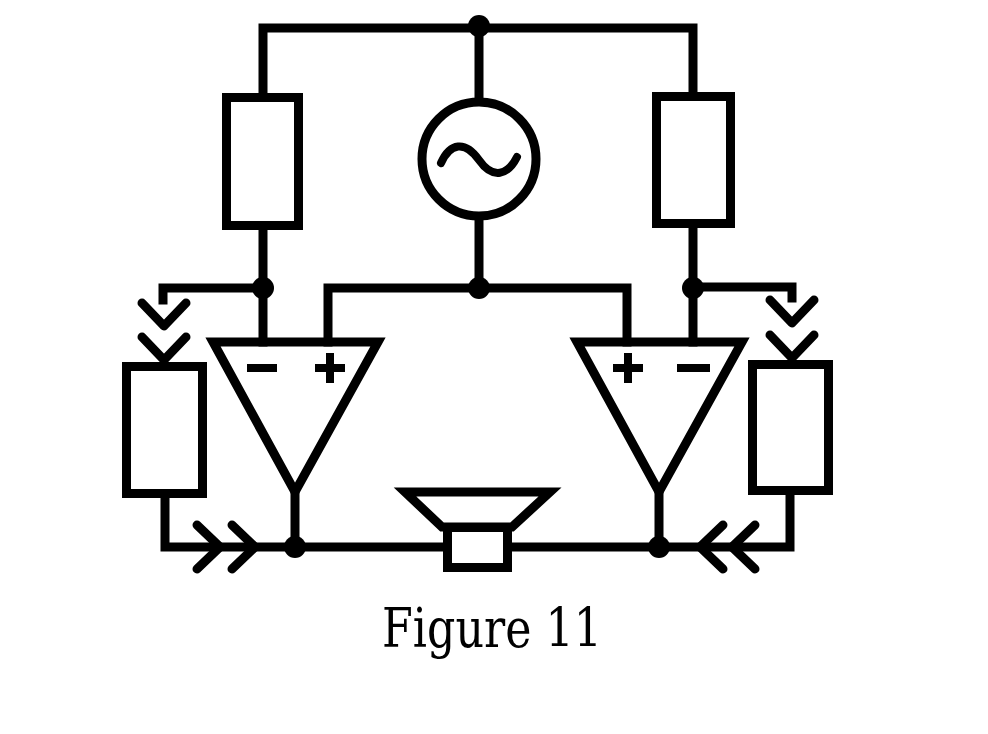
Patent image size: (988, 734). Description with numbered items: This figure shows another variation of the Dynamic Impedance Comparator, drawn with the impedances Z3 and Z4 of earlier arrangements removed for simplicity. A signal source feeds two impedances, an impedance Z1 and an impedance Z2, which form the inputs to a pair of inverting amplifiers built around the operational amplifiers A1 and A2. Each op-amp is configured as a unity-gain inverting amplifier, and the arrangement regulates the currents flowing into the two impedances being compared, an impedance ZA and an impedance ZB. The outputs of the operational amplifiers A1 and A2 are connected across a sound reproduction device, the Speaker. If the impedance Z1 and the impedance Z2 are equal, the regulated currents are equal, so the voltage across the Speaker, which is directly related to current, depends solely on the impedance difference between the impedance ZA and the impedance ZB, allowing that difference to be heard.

The impedance Z1 is at (216, 162).
The impedance Z2 is at (735, 160).
The impedance ZA is at (120, 430).
The impedance ZB is at (837, 428).
The operational amplifier A1 is at (295, 417).
The operational amplifier A2 is at (659, 417).
The element Speaker is at (477, 487).